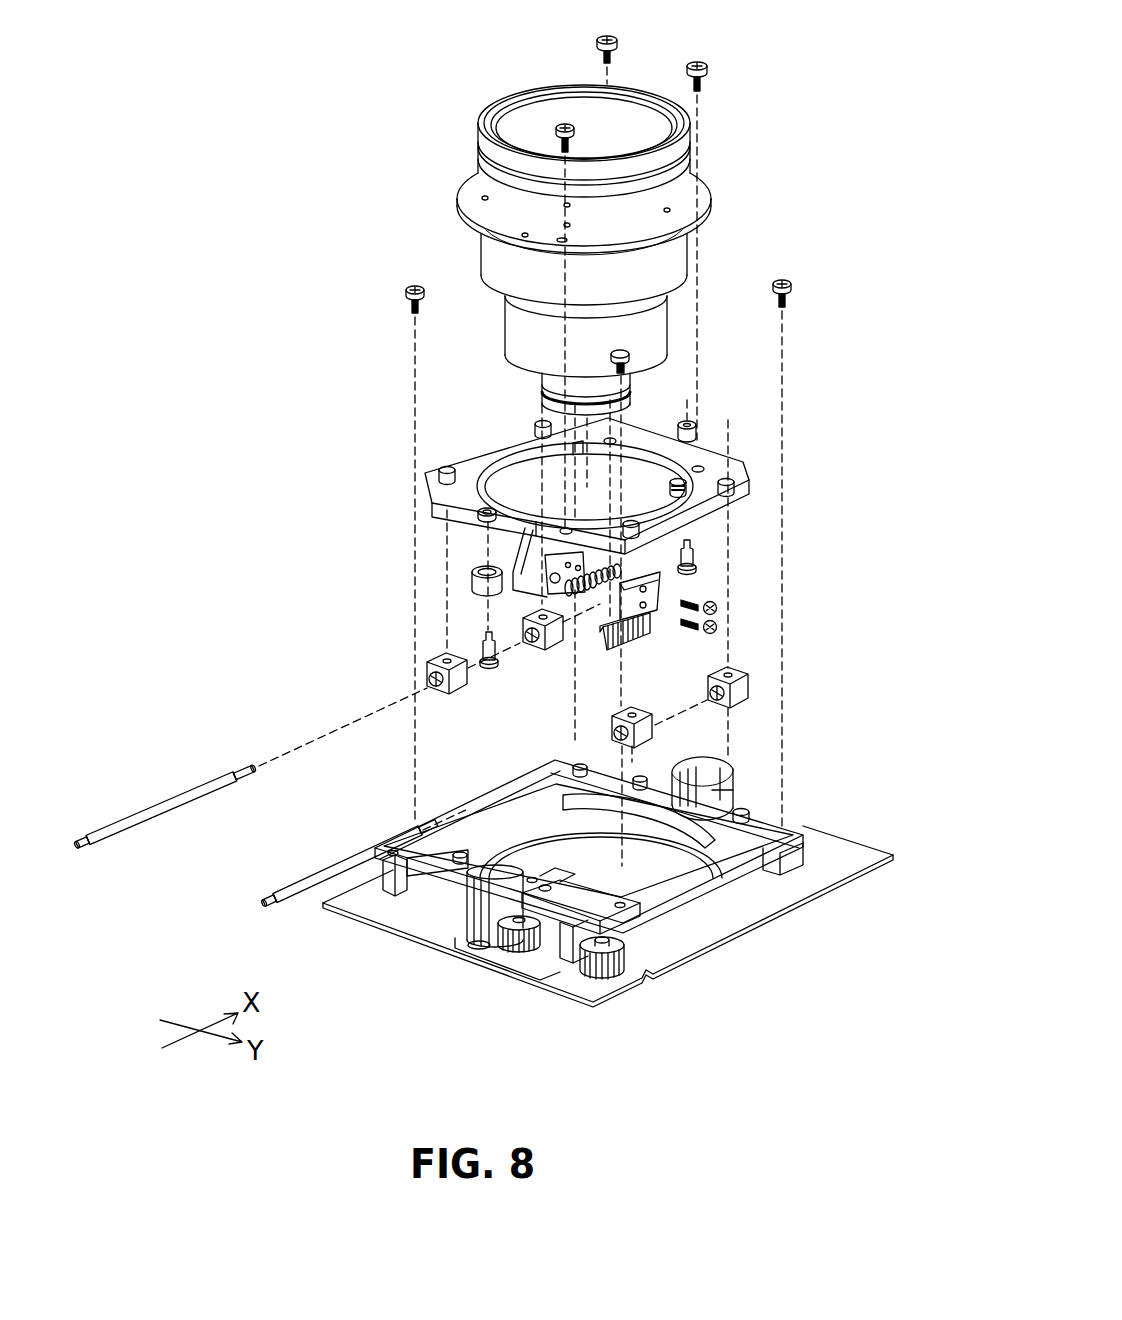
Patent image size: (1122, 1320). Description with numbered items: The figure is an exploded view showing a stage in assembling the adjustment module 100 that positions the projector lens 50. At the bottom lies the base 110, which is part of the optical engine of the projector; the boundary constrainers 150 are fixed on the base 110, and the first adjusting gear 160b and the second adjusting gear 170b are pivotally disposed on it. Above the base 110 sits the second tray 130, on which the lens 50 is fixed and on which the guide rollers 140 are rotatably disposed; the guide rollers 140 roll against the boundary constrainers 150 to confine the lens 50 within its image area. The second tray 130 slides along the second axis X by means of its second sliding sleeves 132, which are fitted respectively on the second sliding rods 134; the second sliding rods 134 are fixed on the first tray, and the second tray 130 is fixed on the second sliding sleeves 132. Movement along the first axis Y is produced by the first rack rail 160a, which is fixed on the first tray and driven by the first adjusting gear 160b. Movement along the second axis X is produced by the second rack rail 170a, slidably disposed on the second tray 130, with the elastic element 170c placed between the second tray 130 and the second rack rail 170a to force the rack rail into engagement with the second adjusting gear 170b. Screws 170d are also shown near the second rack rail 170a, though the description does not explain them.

The lens 50 is at (672, 258).
The adjustment module 100 is at (758, 1055).
The base 110 is at (813, 875).
The second tray 130 is at (737, 477).
The second sliding sleeves 132 is at (750, 686).
The second sliding rods 134 is at (333, 868).
The guide rollers 140 is at (687, 422).
The boundary constrainers 150 is at (737, 767).
The first rack rail 160a is at (605, 882).
The first adjusting gear 160b is at (490, 943).
The second rack rail 170a is at (712, 583).
The second adjusting gear 170b is at (583, 977).
The elastic element 170c is at (562, 600).
The screws 170d is at (718, 600).